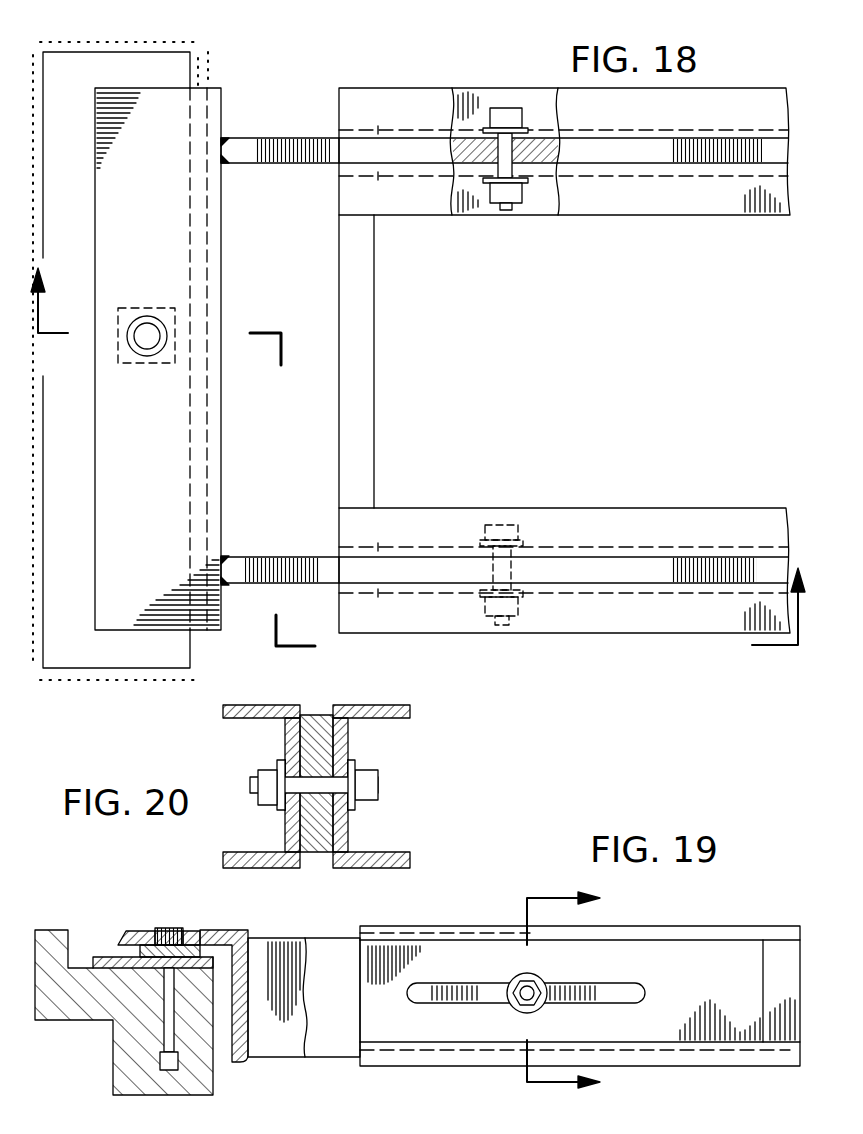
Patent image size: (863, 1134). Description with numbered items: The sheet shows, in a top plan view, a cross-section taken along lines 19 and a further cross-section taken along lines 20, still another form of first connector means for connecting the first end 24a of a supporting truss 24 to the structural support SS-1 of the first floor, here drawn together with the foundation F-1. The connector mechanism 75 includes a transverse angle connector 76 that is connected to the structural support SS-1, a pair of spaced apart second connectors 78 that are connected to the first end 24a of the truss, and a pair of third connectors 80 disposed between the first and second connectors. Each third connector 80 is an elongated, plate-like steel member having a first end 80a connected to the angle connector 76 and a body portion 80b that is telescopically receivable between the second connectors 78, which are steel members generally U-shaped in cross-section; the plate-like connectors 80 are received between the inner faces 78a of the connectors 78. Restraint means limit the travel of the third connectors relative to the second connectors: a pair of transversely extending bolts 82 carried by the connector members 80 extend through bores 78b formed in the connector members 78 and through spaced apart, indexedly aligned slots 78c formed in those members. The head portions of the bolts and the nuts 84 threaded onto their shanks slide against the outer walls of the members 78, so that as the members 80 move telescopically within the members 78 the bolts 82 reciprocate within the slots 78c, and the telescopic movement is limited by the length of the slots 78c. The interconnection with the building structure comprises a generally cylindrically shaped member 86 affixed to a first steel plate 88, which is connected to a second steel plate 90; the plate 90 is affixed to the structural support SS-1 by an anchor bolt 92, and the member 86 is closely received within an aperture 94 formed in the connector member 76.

In FIG. 18, the foundation F-1 is at (245, 55).
In FIG. 19, the foundation F-1 is at (50, 930).
In FIG. 18, the structural support SS-1 is at (88, 678).
In FIG. 19, the structural support SS-1 is at (145, 1026).
In FIG. 18, the transverse angle connector 76 is at (158, 359).
In FIG. 19, the transverse angle connector 76 is at (128, 932).
In FIG. 18, the first steel plate 88 is at (140, 305).
In FIG. 19, the first steel plate 88 is at (152, 968).
In FIG. 18, the generally cylindrically shaped member 86 is at (136, 352).
In FIG. 19, the generally cylindrically shaped member 86 is at (168, 928).
In FIG. 18, the aperture 94 is at (150, 348).
In FIG. 19, the aperture 94 is at (196, 932).
In FIG. 18, the second steel plate 90 is at (145, 457).
In FIG. 19, the second steel plate 90 is at (105, 978).
In FIG. 19, the anchor bolt 92 is at (160, 1064).
In FIG. 18, the first end 80a is at (230, 150).
In FIG. 19, the first end 80a is at (252, 1003).
In FIG. 18, the third connector 80 is at (306, 136).
In FIG. 20, the third connector 80 is at (316, 714).
In FIG. 19, the third connector 80 is at (325, 1040).
In FIG. 18, the second connector 78 is at (768, 108).
In FIG. 20, the second connector 78 is at (255, 700).
In FIG. 19, the second connector 78 is at (665, 958).
In FIG. 20, the inner face 78a is at (325, 752).
In FIG. 20, the bore 78b is at (290, 805).
In FIG. 18, the slot 78c is at (540, 168).
In FIG. 19, the slot 78c is at (640, 998).
In FIG. 18, the body portion 80b is at (600, 152).
In FIG. 19, the body portion 80b is at (628, 935).
In FIG. 18, the bolt 82 is at (505, 112).
In FIG. 20, the bolt 82 is at (382, 786).
In FIG. 19, the bolt 82 is at (545, 982).
In FIG. 18, the nut 84 is at (505, 212).
In FIG. 20, the nut 84 is at (265, 770).
In FIG. 18, the post 24 is at (336, 276).
In FIG. 18, the first end 24a is at (352, 430).
In FIG. 19, the first end 24a is at (780, 945).
In FIG. 18, the connector mechanism 75 is at (368, 78).
In FIG. 19, the connector mechanism 75 is at (445, 905).
In FIG. 18, the section line 19- 19 is at (418, 473).
In FIG. 19, the section line 20- 20 is at (540, 997).